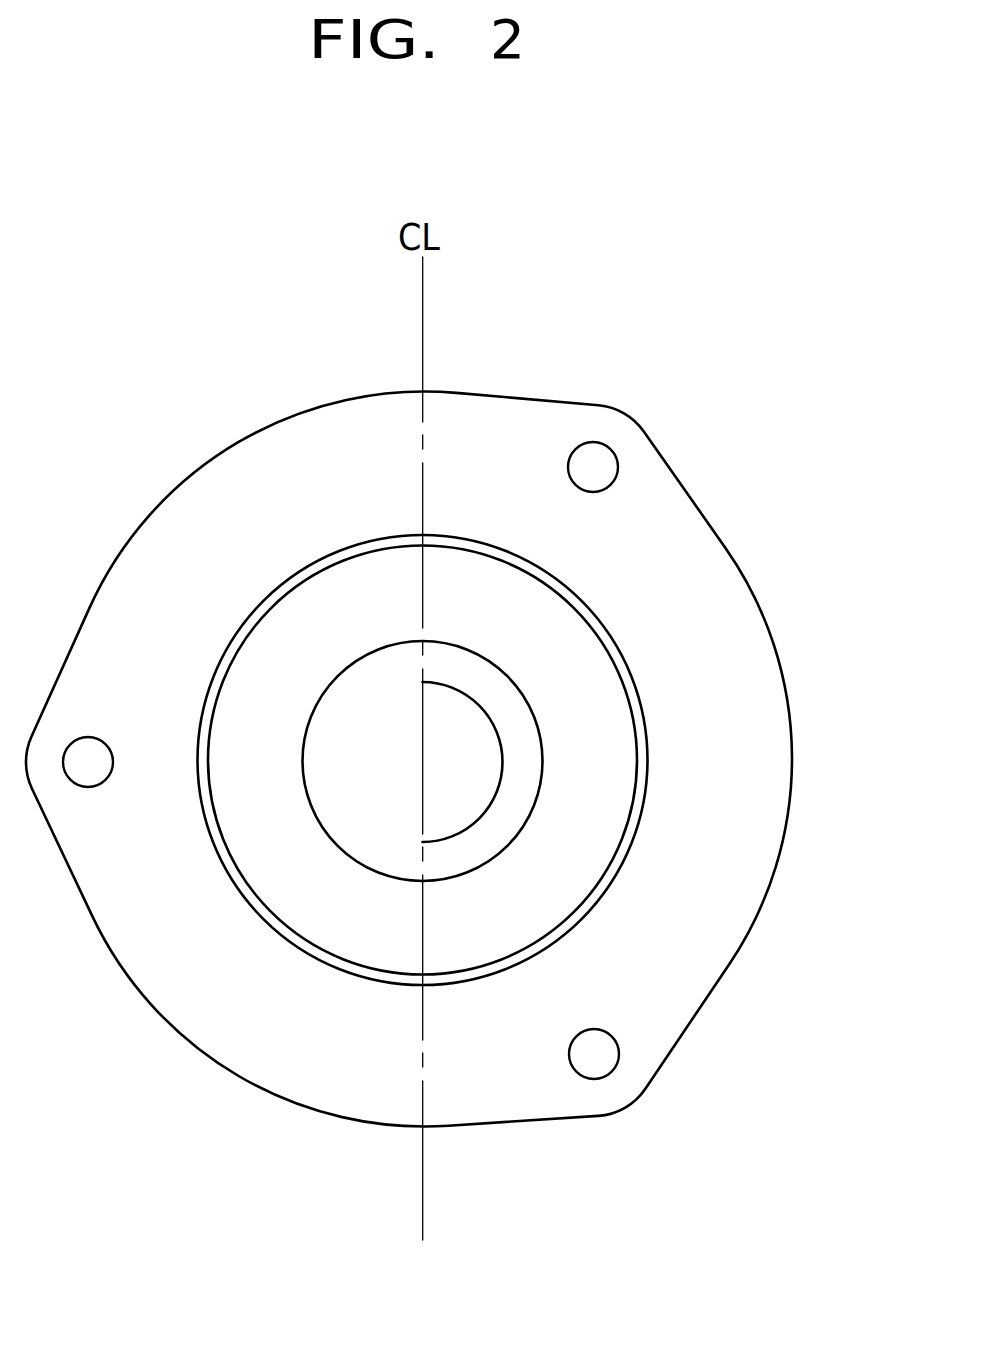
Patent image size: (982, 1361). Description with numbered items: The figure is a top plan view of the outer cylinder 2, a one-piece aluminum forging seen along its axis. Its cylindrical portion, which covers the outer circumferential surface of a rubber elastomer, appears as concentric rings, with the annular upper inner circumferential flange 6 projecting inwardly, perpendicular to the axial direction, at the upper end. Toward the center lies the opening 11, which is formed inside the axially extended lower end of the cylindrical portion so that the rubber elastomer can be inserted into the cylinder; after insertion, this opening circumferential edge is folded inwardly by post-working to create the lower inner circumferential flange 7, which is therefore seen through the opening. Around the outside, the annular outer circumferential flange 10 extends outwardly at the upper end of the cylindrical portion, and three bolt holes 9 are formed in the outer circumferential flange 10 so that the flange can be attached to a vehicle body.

The outer cylinder 2 is at (409, 700).
The upper inner circumferential flange 6 is at (583, 868).
The lower inner circumferential flange 7 is at (498, 812).
The bolt holes 9 is at (597, 462).
The outer circumferential flange 10 is at (220, 487).
The opening 11 is at (393, 683).